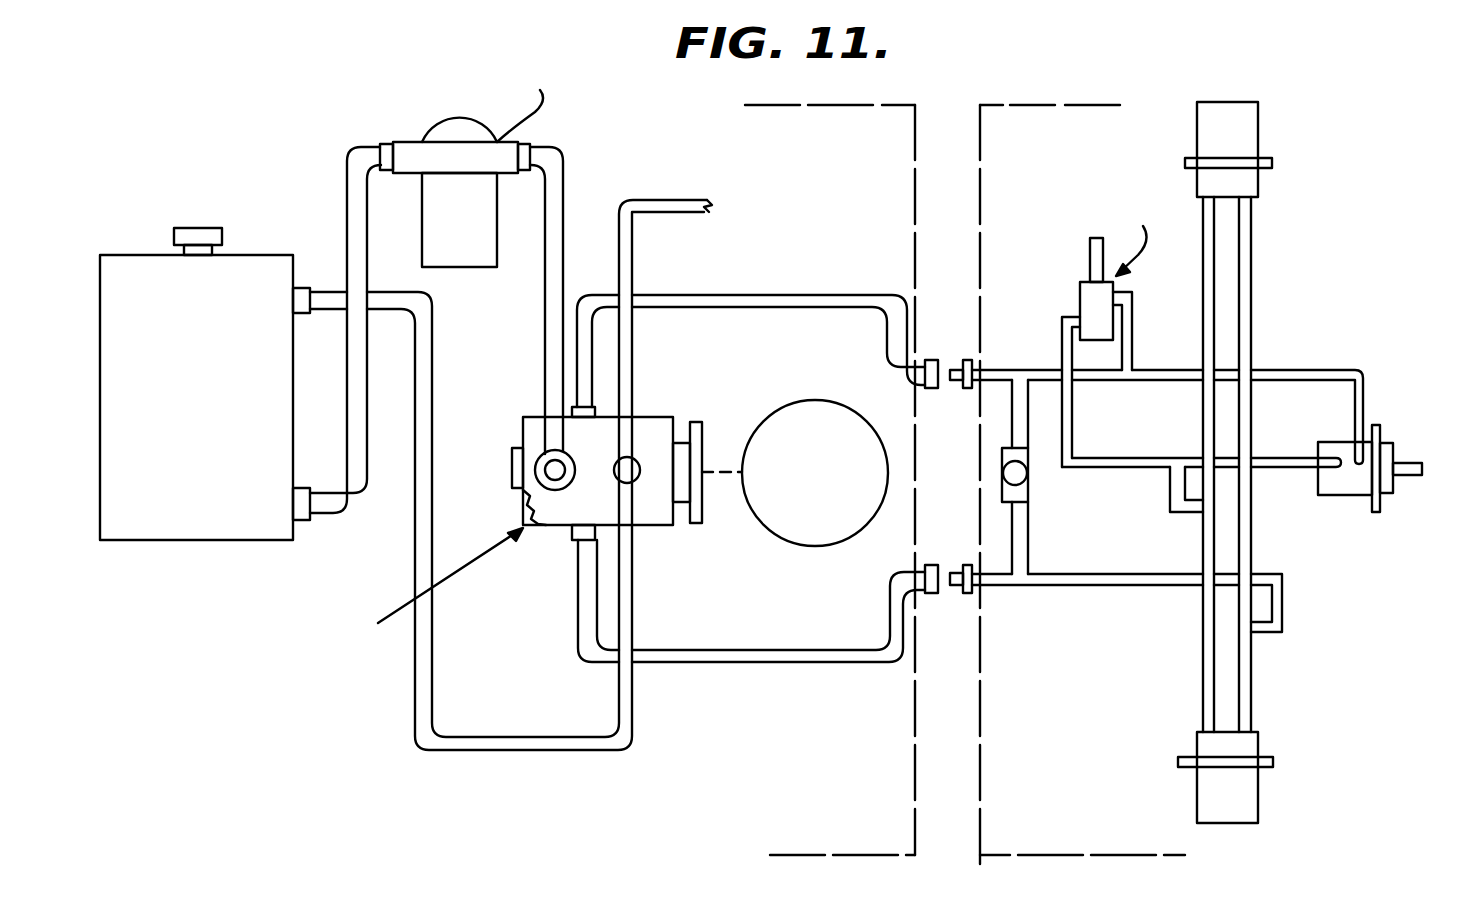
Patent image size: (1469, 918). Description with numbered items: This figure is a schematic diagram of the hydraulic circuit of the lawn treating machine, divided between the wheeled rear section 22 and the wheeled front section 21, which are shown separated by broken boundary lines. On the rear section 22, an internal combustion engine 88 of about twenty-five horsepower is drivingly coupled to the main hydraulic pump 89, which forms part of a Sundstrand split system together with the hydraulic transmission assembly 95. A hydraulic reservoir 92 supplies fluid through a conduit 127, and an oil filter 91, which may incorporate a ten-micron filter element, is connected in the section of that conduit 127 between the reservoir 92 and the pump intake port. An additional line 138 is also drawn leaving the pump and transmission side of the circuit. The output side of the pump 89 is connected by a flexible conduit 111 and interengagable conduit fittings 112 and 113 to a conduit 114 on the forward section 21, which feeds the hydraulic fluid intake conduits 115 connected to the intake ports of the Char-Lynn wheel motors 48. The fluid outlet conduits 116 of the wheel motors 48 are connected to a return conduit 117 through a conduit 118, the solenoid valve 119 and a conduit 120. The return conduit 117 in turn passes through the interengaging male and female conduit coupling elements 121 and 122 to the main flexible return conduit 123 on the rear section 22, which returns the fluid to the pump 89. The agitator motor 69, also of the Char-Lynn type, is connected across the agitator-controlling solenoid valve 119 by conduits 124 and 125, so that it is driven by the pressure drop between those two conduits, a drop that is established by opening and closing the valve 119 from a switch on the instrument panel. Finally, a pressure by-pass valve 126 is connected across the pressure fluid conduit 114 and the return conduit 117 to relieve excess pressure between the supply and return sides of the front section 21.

The hydraulic reservoir 92 is at (148, 532).
The oil filter 91 is at (477, 264).
The conduit 127 is at (545, 283).
The case drain / return line 138 is at (660, 207).
The main hydraulic pump 89 is at (664, 417).
The hydraulic transmission assembly 95 is at (535, 525).
The internal combustion engine 88 is at (803, 548).
The main flexible return conduit 123 is at (768, 293).
The flexible conduit 111 is at (766, 662).
The female conduit coupling element 122 is at (930, 358).
The male conduit coupling element 121 is at (962, 360).
The conduit fitting 112 is at (933, 595).
The conduit fitting 113 is at (968, 595).
The return conduit 117 is at (1020, 360).
The pressure by-pass valve 126 is at (1002, 468).
The conduit 124 is at (1258, 380).
The conduit 114 is at (1140, 585).
The solenoid valve 119 is at (1080, 283).
The conduit 120 is at (1133, 352).
The conduit 118 is at (1073, 452).
The conduit 125 is at (1268, 462).
The fluid outlet conduits 116 is at (1203, 252).
The hydraulic fluid intake conduits 115 is at (1251, 290).
The hydraulic wheel motors 48 is at (1252, 146).
The hydraulic motor 69 is at (1328, 442).
The rear section 22 is at (920, 115).
The front section 21 is at (968, 118).